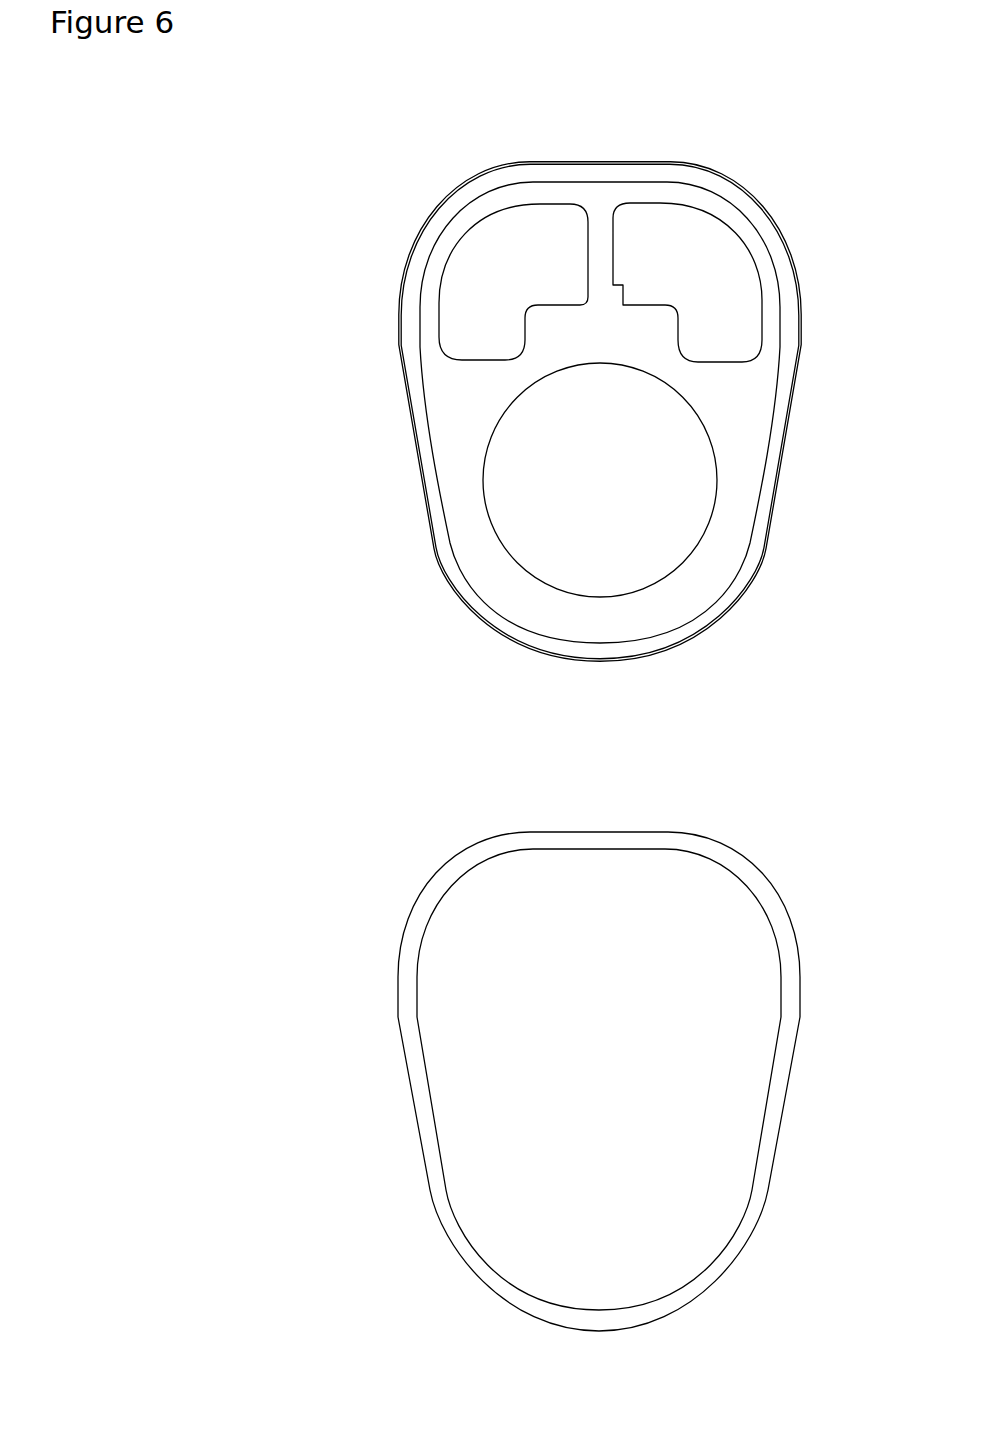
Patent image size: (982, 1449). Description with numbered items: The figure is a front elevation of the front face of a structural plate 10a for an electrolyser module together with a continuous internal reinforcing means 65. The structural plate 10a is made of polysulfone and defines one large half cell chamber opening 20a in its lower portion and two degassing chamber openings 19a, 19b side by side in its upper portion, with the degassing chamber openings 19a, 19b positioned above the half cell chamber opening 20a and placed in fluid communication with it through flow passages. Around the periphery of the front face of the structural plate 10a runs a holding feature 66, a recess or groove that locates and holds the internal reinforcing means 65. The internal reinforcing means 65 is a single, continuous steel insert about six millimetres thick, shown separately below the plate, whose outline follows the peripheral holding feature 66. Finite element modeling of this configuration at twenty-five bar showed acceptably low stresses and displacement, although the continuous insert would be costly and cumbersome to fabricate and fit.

The structural plate 10a is at (793, 408).
The holding feature 66 is at (767, 495).
The half cell chamber opening 20a is at (648, 527).
The degassing chamber opening 19b is at (498, 248).
The degassing chamber opening 19a is at (703, 255).
The internal reinforcing means 65 is at (790, 998).